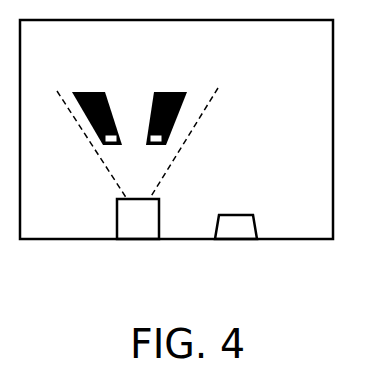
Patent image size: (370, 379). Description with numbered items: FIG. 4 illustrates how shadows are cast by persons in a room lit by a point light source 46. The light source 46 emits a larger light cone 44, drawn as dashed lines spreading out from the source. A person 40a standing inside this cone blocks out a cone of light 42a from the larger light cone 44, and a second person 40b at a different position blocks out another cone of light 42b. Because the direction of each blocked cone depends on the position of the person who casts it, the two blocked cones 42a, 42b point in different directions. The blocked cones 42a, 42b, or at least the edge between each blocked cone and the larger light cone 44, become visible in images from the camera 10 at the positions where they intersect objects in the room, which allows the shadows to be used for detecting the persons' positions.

The camera 10 is at (237, 228).
The person 40a is at (105, 138).
The person 40b is at (165, 140).
The blocked cone of light 42a is at (110, 93).
The blocked cone of light 42b is at (152, 93).
The larger light cone 44 is at (152, 181).
The point light source 46 is at (140, 230).